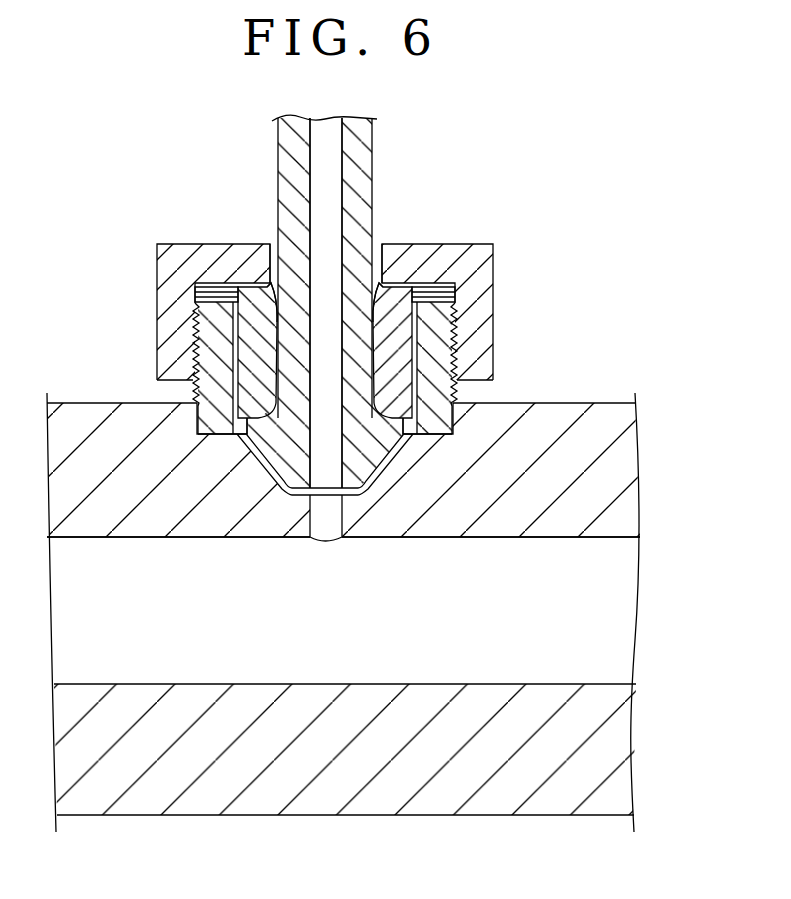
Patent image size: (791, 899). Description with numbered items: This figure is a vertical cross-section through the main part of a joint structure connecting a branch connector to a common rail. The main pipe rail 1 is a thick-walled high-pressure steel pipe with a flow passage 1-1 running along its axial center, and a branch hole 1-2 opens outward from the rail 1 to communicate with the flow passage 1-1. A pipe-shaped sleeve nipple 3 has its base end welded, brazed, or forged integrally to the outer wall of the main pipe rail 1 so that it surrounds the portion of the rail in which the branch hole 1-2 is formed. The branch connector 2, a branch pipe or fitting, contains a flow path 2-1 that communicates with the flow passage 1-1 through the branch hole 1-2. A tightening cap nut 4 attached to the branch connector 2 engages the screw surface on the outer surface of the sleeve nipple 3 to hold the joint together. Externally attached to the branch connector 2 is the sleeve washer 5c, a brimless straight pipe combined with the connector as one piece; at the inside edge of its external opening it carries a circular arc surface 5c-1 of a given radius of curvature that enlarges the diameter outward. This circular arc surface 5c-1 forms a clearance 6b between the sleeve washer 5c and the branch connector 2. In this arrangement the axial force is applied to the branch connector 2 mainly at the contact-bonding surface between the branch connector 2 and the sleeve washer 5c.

The main pipe rail 1 is at (620, 458).
The flow passage 1-1 is at (598, 537).
The branch hole 1-2 is at (330, 522).
The branch connector 2 is at (372, 142).
The flow path 2-1 is at (320, 152).
The sleeve nipple 3 is at (215, 351).
The tightening cap nut 4 is at (468, 262).
The sleeve washer 5c is at (397, 329).
The circular arc surface 5c-1 is at (380, 290).
The clearance 6b is at (266, 283).